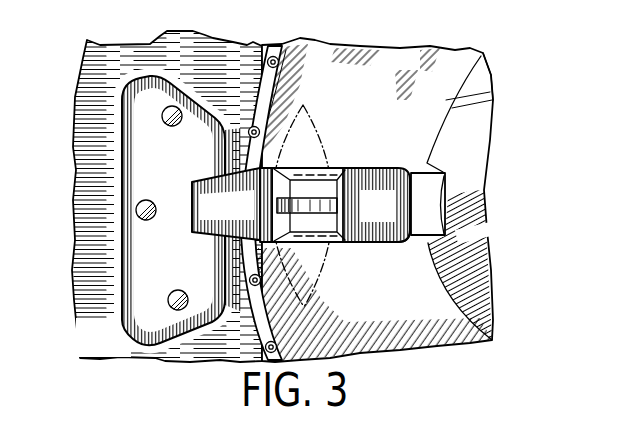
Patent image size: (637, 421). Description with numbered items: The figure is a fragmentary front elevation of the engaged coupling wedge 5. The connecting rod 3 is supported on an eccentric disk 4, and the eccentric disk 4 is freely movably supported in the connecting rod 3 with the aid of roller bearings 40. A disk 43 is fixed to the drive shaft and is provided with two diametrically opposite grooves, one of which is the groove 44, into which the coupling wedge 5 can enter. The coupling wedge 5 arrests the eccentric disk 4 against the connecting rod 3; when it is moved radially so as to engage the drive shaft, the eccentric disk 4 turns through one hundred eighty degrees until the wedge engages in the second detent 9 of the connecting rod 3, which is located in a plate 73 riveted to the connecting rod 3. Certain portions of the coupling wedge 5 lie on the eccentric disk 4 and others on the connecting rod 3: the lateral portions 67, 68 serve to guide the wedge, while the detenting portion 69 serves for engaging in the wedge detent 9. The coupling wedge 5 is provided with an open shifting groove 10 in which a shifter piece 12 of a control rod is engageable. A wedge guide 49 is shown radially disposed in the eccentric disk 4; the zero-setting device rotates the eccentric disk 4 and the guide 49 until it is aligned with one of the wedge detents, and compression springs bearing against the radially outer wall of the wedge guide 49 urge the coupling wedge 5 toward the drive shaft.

The connecting rod 3 is at (113, 228).
The eccentric disk 4 is at (393, 74).
The coupling wedge 5 is at (368, 215).
The detent 9 is at (212, 237).
The shifting groove 10 is at (288, 201).
The shifter piece 12 is at (316, 118).
The roller bearings 40 is at (271, 57).
The disk 43 is at (477, 89).
The groove 44 is at (435, 165).
The wedge guide 49 is at (432, 213).
The lateral portion 67 is at (398, 167).
The lateral portion 68 is at (398, 247).
The detenting portion 69 is at (222, 208).
The plate 73 is at (142, 326).